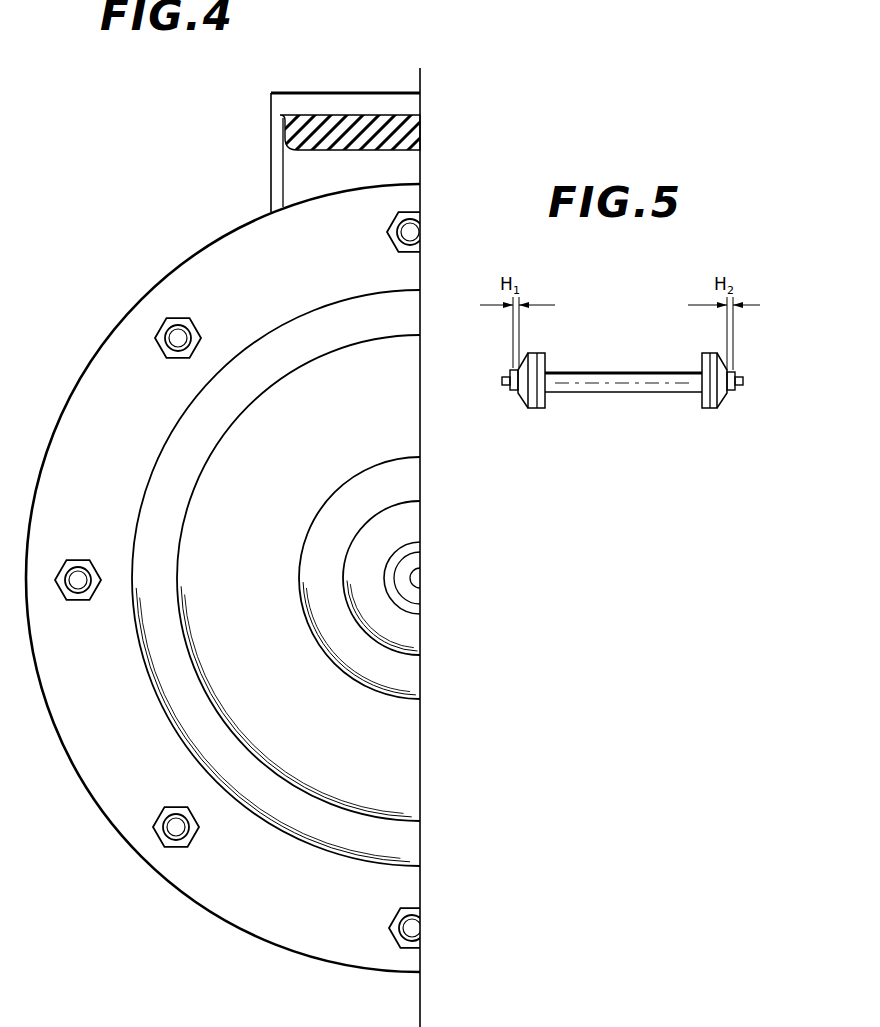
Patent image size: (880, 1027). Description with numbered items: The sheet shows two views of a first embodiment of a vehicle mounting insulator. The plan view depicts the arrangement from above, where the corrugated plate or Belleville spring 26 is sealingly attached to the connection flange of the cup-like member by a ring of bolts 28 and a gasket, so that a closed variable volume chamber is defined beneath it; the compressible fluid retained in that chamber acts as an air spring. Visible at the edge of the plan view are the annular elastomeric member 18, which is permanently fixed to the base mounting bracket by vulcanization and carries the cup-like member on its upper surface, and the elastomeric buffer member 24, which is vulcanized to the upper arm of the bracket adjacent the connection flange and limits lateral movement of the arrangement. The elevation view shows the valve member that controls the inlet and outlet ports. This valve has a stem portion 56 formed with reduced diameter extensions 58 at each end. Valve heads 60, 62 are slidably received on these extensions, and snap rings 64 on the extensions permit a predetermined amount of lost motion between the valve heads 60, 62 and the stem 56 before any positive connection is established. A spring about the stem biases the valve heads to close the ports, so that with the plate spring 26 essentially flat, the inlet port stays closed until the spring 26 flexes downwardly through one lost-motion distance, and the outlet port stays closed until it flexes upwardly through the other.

In FIG. 4, the elastomeric member 18 is at (273, 100).
In FIG. 4, the elastomeric buffer member 24 is at (337, 118).
In FIG. 4, the plate spring 26 is at (174, 720).
In FIG. 4, the bolts 28 is at (76, 545).
In FIG. 5, the stem portion 56 is at (620, 384).
In FIG. 5, the reduced diameter extensions 58 is at (502, 379).
In FIG. 5, the valve head 60 is at (524, 400).
In FIG. 5, the valve head 62 is at (723, 403).
In FIG. 5, the snap rings 64 is at (508, 370).